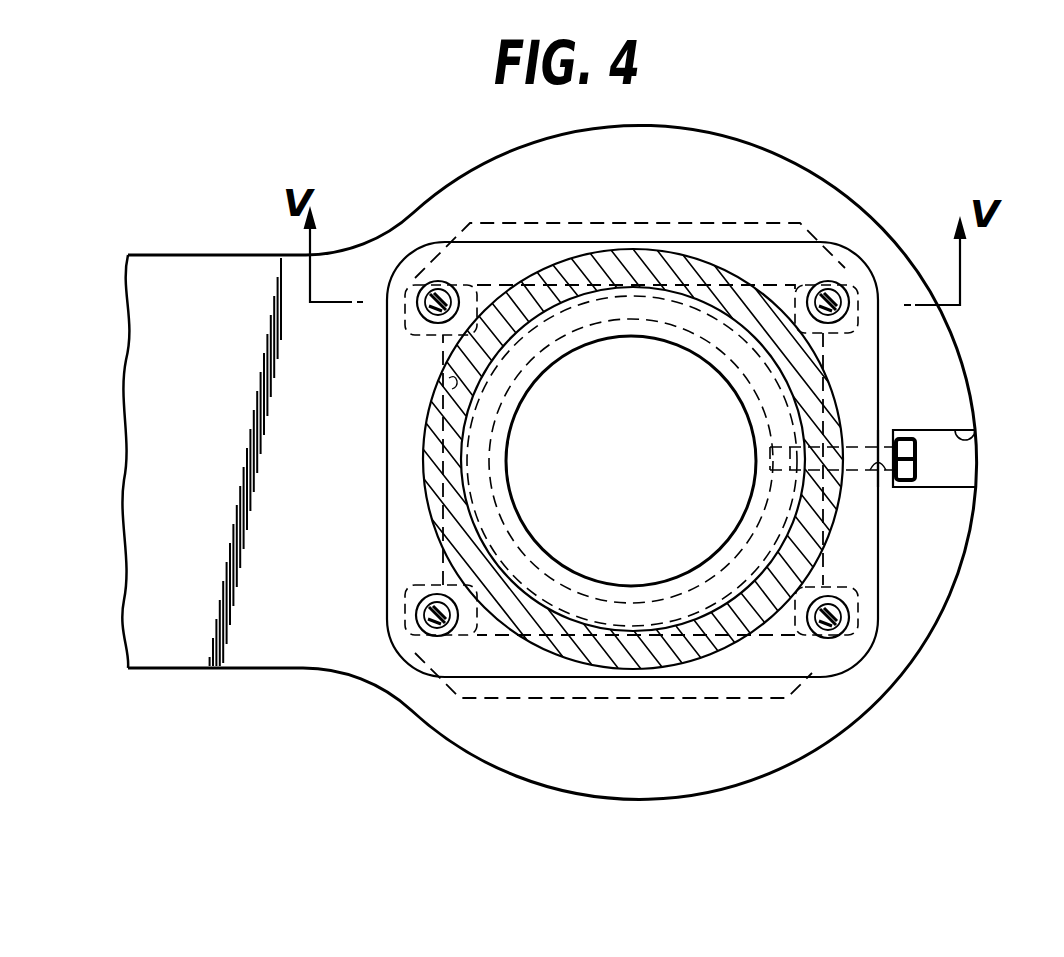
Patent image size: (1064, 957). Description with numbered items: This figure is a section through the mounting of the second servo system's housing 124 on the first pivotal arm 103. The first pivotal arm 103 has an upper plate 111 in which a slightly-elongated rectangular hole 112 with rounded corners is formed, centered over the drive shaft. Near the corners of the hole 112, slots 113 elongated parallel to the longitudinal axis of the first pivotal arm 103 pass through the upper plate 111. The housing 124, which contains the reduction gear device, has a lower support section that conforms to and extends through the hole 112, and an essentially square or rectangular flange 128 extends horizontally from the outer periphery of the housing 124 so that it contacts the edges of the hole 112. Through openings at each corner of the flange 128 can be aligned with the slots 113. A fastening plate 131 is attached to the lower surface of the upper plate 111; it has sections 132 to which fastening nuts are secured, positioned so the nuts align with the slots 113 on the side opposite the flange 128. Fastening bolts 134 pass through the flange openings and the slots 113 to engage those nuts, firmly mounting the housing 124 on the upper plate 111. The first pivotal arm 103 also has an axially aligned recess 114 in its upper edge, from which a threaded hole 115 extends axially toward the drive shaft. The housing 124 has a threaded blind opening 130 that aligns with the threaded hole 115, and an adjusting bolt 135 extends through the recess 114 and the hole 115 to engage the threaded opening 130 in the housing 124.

The first pivotal arm 103 is at (195, 668).
The upper plate 111 is at (206, 268).
The rectangular hole 112 is at (452, 386).
The slots 113 is at (420, 290).
The recess 114 is at (975, 437).
The threaded hole 115 is at (880, 472).
The housing 124 is at (428, 470).
The flange 128 is at (485, 252).
The threaded blind opening 130 is at (772, 456).
The fastening plate 131 is at (662, 222).
The sections 132 is at (407, 328).
The fastening bolts 134 is at (432, 289).
The adjusting bolt 135 is at (920, 462).